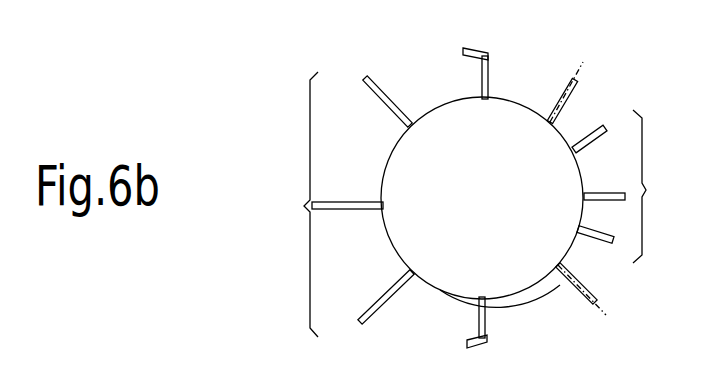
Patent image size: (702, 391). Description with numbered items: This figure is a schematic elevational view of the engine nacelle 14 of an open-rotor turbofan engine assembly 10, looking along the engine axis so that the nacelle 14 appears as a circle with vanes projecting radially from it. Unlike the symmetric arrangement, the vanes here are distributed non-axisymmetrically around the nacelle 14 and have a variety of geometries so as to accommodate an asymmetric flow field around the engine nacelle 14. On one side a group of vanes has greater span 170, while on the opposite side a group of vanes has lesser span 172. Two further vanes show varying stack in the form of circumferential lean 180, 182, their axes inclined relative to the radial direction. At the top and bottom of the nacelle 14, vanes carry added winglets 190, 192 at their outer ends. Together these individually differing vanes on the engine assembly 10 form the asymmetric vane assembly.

The open-rotor turbofan engine assembly 10 is at (528, 84).
The engine nacelle 14 is at (532, 292).
The vanes having greater span 170 is at (338, 204).
The vanes having lesser span 172 is at (628, 186).
The circumferential lean 180 is at (563, 113).
The circumferential lean 182 is at (567, 268).
The winglet 190 is at (462, 58).
The winglet 192 is at (475, 339).